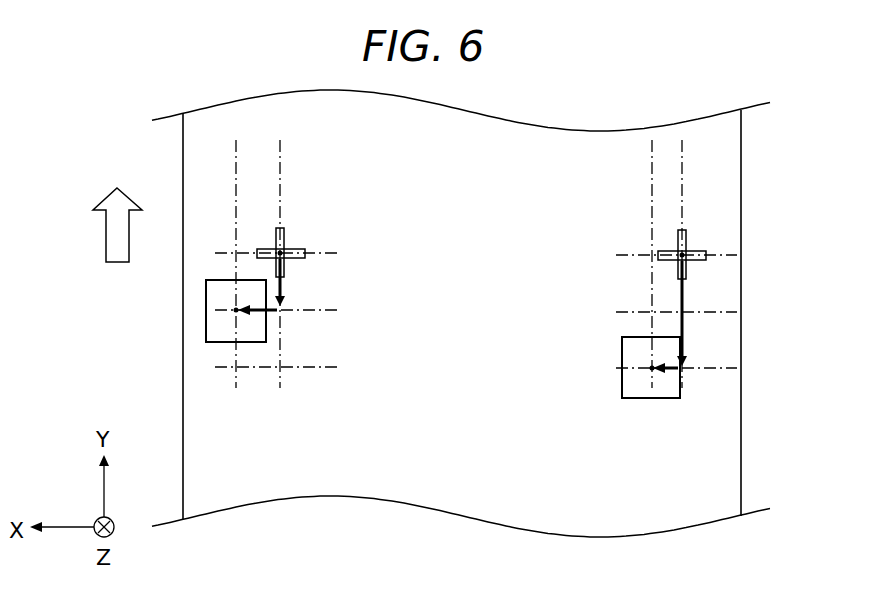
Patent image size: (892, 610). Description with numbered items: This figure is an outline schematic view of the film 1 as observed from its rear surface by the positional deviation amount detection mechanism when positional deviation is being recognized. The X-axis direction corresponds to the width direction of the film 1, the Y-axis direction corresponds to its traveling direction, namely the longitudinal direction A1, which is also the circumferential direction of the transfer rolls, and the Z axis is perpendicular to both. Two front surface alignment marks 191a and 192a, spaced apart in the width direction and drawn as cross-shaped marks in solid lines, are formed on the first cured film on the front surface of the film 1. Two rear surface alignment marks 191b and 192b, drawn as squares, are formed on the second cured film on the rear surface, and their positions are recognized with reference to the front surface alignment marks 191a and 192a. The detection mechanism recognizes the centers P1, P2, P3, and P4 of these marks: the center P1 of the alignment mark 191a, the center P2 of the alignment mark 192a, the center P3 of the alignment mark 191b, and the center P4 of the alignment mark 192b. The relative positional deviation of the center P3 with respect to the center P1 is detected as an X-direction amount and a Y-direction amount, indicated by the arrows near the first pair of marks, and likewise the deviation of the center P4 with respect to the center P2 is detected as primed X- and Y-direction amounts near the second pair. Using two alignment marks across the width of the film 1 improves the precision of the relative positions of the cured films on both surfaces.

The film 1 is at (742, 272).
The front surface alignment mark 191a is at (290, 232).
The rear surface alignment mark 191b is at (206, 352).
The front surface alignment mark 192a is at (693, 233).
The rear surface alignment mark 192b is at (618, 408).
The center of alignment mark 191a P1 is at (277, 250).
The center of alignment mark 192a P2 is at (679, 252).
The center of alignment mark 191b P3 is at (234, 309).
The center of alignment mark 192b P4 is at (650, 367).
The longitudinal direction A1 is at (106, 238).